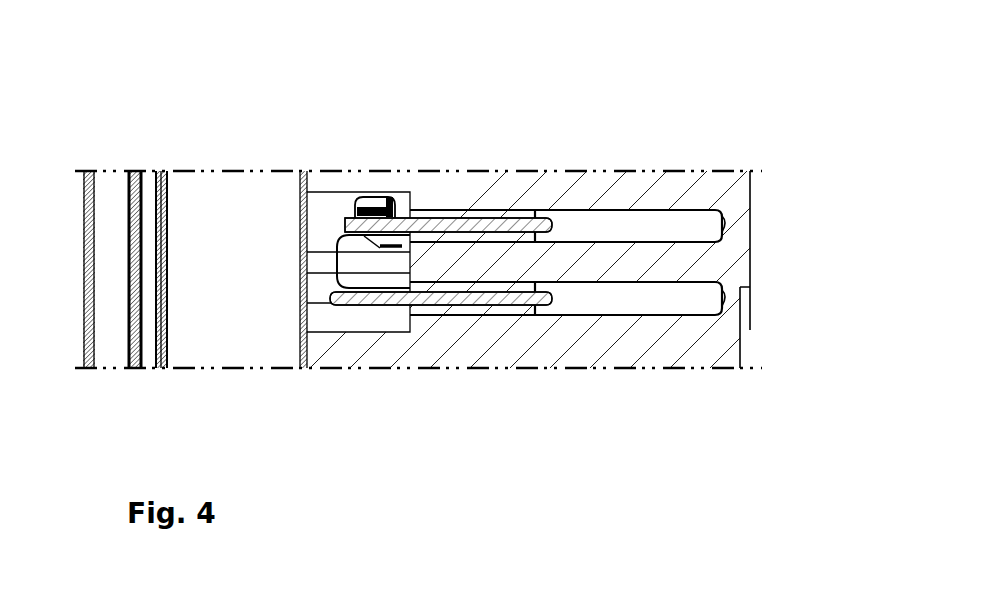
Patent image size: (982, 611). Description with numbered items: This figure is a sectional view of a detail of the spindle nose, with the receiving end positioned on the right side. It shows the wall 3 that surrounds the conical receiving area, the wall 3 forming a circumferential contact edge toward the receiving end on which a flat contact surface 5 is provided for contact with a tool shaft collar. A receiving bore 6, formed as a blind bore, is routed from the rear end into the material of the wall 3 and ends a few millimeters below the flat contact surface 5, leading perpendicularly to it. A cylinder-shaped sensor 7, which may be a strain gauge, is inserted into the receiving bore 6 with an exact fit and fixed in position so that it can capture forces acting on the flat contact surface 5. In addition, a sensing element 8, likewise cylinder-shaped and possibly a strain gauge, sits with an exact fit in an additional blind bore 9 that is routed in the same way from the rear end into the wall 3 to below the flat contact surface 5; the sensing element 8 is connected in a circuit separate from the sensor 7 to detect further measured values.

The wall 3 is at (473, 347).
The flat contact surface 5 is at (750, 255).
The receiving bore 6 is at (727, 215).
The sensor 7 is at (660, 223).
The sensing element 8 is at (633, 303).
The blind bore 9 is at (725, 302).